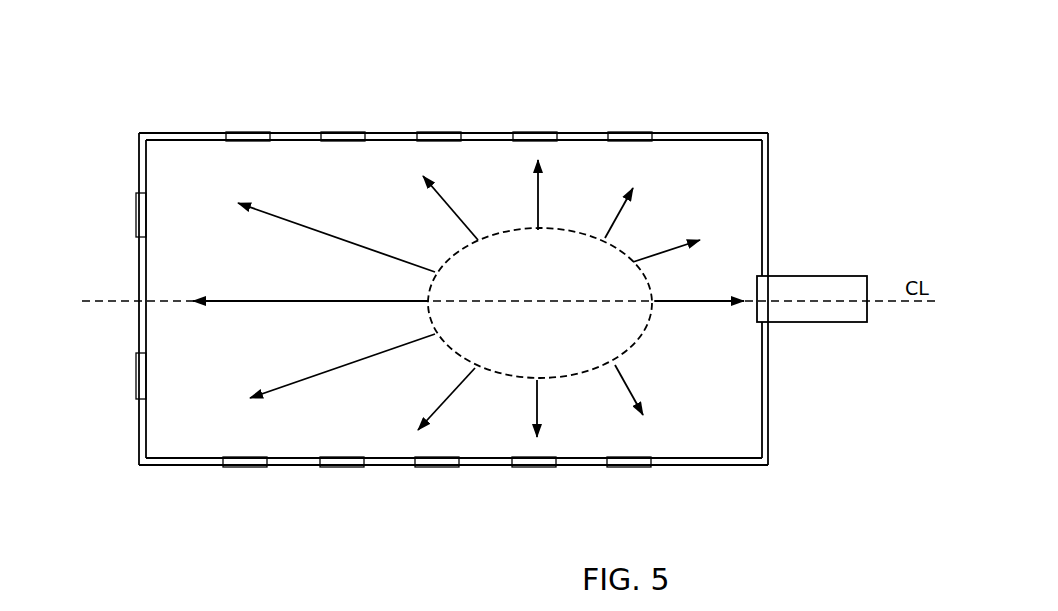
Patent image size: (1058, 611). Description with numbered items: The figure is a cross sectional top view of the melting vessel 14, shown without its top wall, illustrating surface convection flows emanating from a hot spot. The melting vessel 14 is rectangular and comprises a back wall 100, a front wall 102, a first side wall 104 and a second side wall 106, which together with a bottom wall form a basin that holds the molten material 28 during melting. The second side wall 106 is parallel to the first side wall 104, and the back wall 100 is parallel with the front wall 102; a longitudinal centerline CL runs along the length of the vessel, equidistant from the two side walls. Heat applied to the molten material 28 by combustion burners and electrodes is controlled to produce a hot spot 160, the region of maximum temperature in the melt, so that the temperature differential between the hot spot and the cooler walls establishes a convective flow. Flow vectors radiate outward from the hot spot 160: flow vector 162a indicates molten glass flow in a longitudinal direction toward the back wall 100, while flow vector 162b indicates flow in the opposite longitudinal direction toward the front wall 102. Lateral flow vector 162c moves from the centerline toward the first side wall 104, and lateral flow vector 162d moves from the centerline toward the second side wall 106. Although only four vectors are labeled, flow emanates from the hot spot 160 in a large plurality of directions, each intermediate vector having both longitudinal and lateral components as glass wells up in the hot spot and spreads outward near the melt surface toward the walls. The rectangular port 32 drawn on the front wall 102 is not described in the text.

The melting vessel 14 is at (812, 228).
The molten material 28 is at (710, 437).
The inlet port 32 is at (822, 322).
The back wall 100 is at (139, 272).
The front wall 102 is at (770, 194).
The first side wall 104 is at (706, 133).
The second side wall 106 is at (189, 466).
The hot spot 160 is at (540, 303).
The flow vector 162a is at (297, 300).
The flow vector 162b is at (683, 303).
The lateral flow vector 162c is at (541, 193).
The lateral flow vector 162d is at (532, 400).